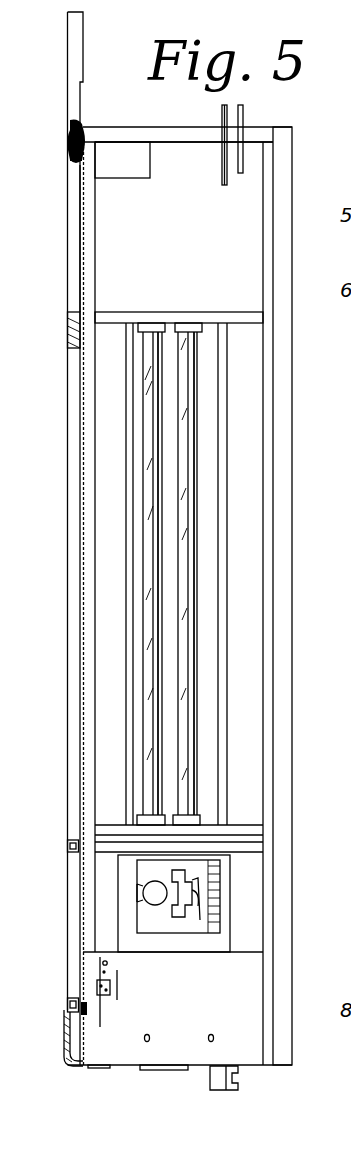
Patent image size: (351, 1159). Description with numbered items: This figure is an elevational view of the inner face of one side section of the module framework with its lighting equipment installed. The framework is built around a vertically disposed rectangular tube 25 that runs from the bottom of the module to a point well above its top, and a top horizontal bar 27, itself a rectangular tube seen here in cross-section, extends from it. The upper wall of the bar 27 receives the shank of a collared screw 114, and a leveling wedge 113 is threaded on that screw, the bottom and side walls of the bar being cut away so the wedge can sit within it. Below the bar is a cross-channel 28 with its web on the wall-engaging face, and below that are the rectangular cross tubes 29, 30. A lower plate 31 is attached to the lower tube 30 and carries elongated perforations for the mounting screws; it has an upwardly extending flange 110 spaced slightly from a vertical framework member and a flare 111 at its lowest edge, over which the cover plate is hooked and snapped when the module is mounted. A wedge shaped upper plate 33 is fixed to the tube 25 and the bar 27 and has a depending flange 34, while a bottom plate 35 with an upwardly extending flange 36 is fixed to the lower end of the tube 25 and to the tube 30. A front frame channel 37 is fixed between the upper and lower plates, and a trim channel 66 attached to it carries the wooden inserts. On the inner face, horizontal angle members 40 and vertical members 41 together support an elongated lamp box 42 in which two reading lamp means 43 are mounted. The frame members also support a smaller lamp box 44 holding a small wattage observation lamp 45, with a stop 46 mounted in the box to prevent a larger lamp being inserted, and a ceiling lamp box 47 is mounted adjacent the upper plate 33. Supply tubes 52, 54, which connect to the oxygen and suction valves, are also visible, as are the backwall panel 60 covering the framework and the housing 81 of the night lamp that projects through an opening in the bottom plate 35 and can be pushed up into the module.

The rectangular tube 25 is at (78, 57).
The top horizontal bar 27 is at (68, 152).
The cross-channel 28 is at (66, 338).
The cross tube 29 is at (67, 850).
The lower cross tube 30 is at (66, 1003).
The lower plate 31 is at (68, 1043).
The upper plate 33 is at (167, 128).
The flange 34 is at (197, 137).
The bottom plate 35 is at (157, 1071).
The upwardly extending flange 36 is at (212, 1006).
The front frame channel 37 is at (268, 568).
The horizontal angle member 40 is at (212, 318).
The vertical member 41 is at (128, 656).
The elongated lamp box 42 is at (207, 453).
The reading lamp means 43 is at (157, 530).
The smaller lamp box 44 is at (200, 878).
The observation lamp 45 is at (156, 905).
The stop 46 is at (198, 920).
The ceiling lamp box 47 is at (127, 160).
The supply tube 52 is at (245, 113).
The supply tube 54 is at (224, 185).
The backwall panel 60 is at (85, 283).
The trim channel 66 is at (290, 366).
The night lamp housing 81 is at (222, 1089).
The upwardly extending flange 110 is at (82, 1008).
The flare 111 is at (66, 1066).
The leveling wedge 113 is at (68, 140).
The collared screw 114 is at (78, 128).